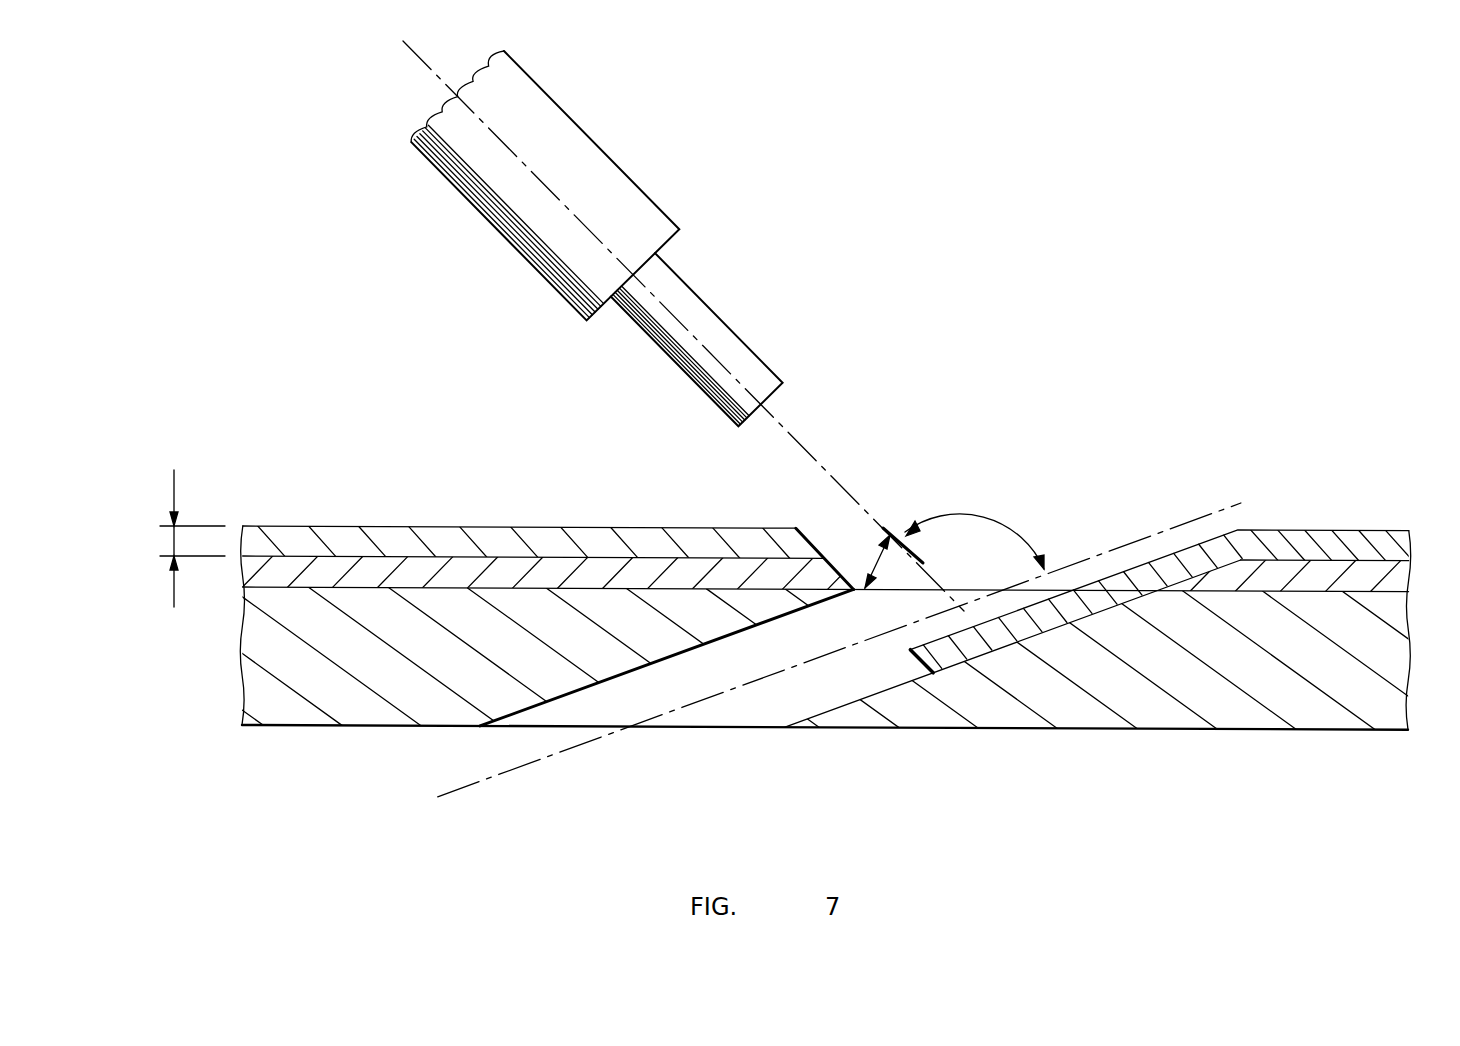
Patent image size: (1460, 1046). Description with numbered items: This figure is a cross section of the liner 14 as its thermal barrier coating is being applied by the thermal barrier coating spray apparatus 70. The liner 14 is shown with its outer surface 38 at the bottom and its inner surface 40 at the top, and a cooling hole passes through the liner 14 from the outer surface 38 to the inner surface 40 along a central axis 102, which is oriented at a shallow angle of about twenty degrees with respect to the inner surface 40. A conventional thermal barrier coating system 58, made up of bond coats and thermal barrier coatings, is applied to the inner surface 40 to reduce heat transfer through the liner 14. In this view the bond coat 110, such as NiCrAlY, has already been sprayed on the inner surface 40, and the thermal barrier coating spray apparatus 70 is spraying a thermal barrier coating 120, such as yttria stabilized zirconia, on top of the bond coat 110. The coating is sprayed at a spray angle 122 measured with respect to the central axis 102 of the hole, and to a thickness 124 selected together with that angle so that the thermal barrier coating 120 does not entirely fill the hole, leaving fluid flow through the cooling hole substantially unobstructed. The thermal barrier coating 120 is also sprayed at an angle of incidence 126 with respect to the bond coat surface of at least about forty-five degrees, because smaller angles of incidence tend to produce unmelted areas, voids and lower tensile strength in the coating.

The thermal barrier coating spray apparatus 70 is at (722, 303).
The thickness 124 is at (177, 487).
The thermal barrier coating 120 is at (338, 526).
The thermal barrier coating system 58 is at (532, 518).
The angle of incidence 126 is at (870, 560).
The spray angle 122 is at (983, 514).
The bond coat 110 is at (1267, 558).
The inner surface 40 is at (1353, 592).
The liner 14 is at (368, 737).
The outer surface 38 is at (1012, 736).
The central axis 102 is at (480, 790).